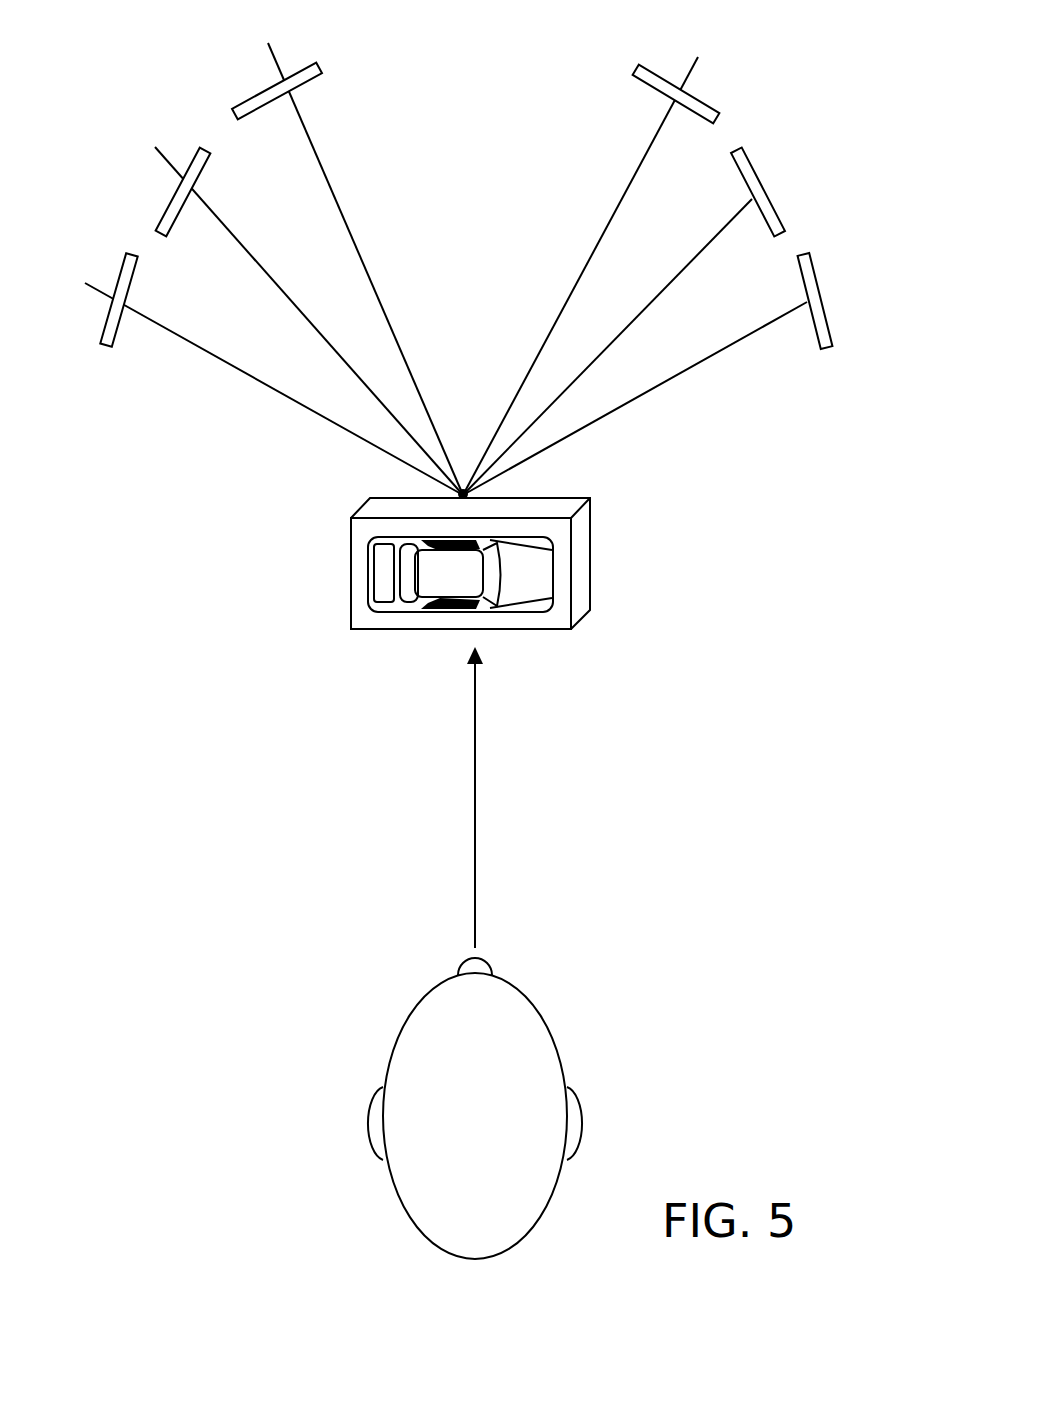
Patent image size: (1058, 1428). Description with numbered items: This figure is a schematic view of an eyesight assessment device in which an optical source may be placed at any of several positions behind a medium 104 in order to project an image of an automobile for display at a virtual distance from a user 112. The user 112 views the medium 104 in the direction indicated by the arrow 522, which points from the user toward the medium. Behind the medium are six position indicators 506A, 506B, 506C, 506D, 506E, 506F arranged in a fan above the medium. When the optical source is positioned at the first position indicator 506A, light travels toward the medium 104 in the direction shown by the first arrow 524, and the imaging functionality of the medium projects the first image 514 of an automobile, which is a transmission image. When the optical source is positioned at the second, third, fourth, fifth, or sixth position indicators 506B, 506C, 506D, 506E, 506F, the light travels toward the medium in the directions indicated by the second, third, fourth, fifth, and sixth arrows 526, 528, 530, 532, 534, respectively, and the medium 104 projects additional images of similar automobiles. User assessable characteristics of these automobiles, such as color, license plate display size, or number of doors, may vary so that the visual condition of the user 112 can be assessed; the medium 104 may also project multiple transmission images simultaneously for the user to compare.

The medium 104 is at (588, 525).
The first image 514 is at (412, 542).
The first arrow 524 is at (630, 401).
The second arrow 526 is at (587, 368).
The third arrow 528 is at (635, 175).
The fourth arrow 530 is at (324, 172).
The fifth arrow 532 is at (336, 352).
The sixth arrow 534 is at (225, 361).
The first position indicator 506A is at (825, 302).
The second position indicator 506B is at (768, 183).
The third position indicator 506C is at (689, 75).
The fourth position indicator 506D is at (277, 67).
The fifth position indicator 506E is at (171, 170).
The sixth position indicator 506F is at (99, 300).
The arrow 522 is at (475, 757).
The user 112 is at (532, 1228).